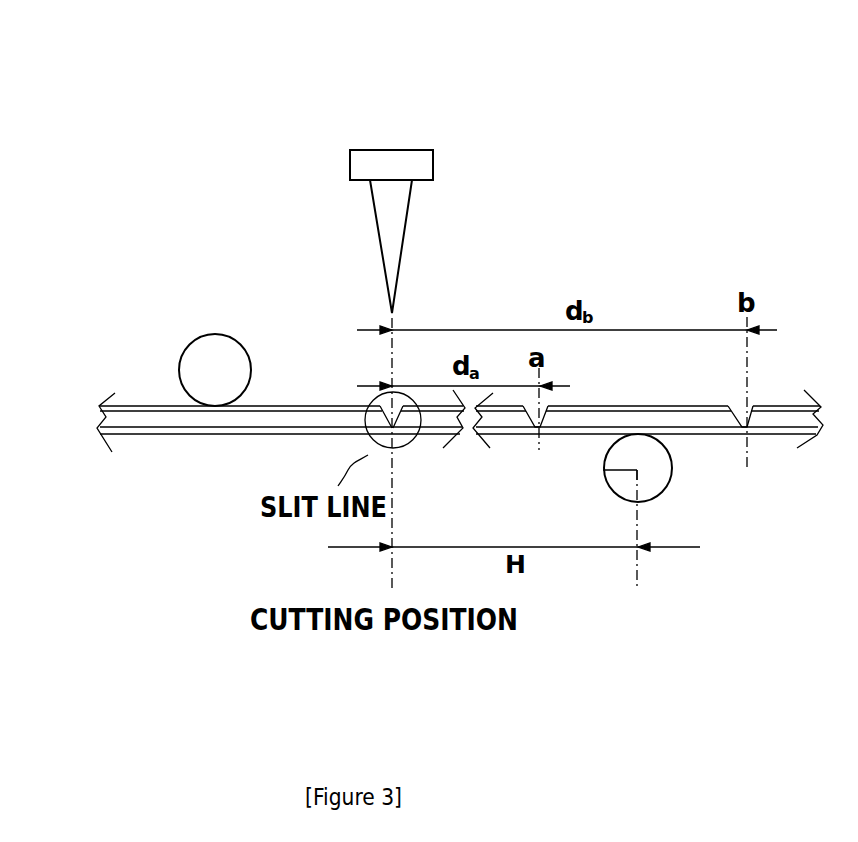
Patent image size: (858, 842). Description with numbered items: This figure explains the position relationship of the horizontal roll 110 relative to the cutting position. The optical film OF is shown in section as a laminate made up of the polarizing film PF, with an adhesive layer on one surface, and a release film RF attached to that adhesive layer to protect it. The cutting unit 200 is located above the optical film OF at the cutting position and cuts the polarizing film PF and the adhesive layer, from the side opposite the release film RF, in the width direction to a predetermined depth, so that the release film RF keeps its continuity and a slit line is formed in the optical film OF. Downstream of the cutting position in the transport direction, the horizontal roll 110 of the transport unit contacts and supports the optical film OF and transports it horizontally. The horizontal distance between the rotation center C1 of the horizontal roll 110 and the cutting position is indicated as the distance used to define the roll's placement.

The cutting unit 200 is at (399, 149).
The horizontal roll 110 is at (672, 477).
The polarizing film PF is at (287, 406).
The release film RF is at (288, 436).
The optical film OF is at (81, 439).
The rotation center of the horizontal roll C1 is at (603, 470).